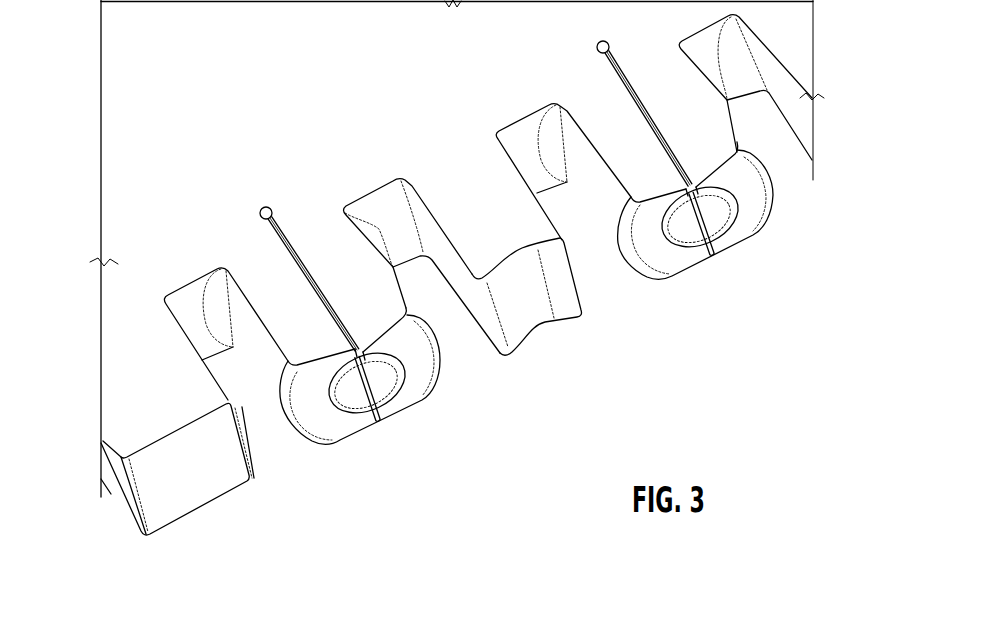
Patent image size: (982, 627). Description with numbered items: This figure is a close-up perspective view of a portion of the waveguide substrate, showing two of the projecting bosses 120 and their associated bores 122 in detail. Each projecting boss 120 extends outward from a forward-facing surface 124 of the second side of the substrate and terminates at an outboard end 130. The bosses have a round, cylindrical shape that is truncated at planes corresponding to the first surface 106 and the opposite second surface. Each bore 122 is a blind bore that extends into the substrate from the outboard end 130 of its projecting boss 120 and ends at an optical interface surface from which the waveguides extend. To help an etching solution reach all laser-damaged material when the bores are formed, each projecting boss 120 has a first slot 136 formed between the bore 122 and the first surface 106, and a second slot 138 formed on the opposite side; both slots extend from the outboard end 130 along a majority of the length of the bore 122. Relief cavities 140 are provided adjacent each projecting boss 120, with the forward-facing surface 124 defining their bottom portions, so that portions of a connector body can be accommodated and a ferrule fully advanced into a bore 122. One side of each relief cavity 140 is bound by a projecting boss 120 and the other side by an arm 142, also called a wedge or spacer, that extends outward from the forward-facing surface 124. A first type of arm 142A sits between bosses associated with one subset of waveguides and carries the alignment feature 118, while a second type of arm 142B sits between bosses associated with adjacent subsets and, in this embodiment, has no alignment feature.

The first surface 106 is at (122, 142).
The alignment feature 118 is at (543, 323).
The projecting boss 120 is at (509, 253).
The bore 122 is at (720, 213).
The forward-facing surface 124 is at (382, 202).
The outboard end 130 is at (763, 188).
The first slot 136 is at (281, 238).
The second slot 138 is at (358, 398).
The relief cavity 140 is at (600, 277).
The arm 142 is at (456, 294).
The first type of arm 142A is at (480, 178).
The second type of arm 142B is at (186, 489).